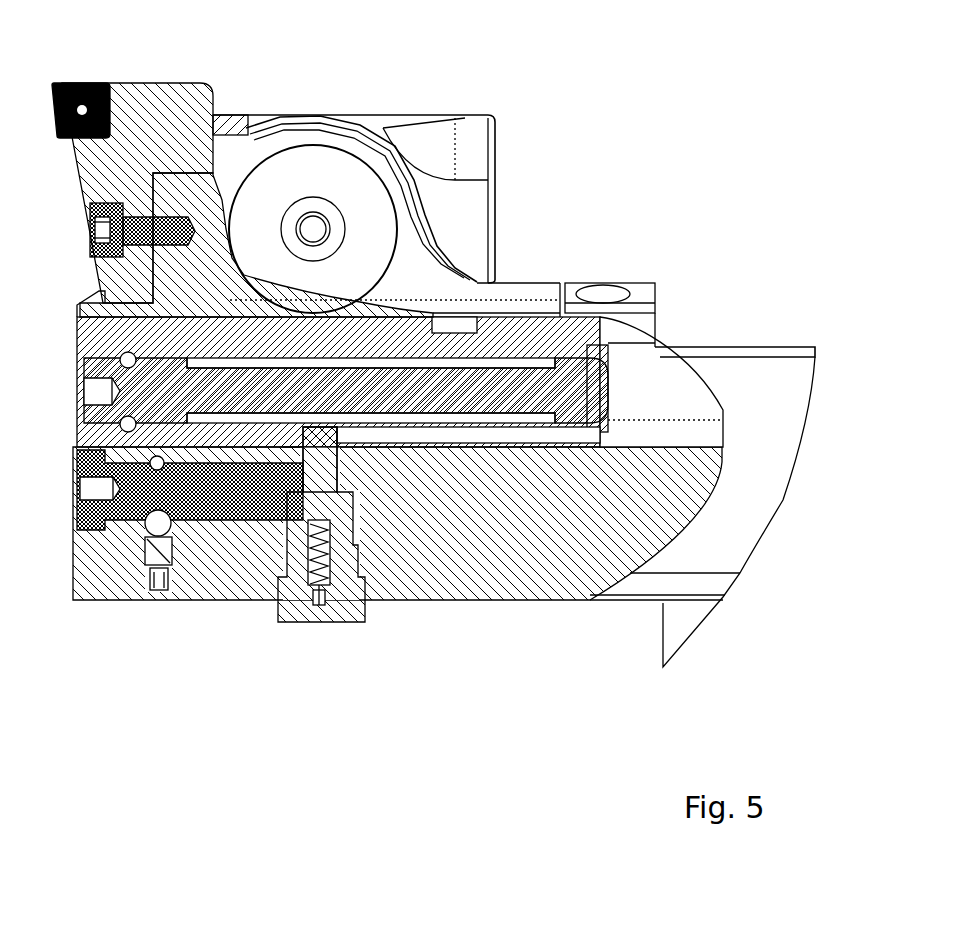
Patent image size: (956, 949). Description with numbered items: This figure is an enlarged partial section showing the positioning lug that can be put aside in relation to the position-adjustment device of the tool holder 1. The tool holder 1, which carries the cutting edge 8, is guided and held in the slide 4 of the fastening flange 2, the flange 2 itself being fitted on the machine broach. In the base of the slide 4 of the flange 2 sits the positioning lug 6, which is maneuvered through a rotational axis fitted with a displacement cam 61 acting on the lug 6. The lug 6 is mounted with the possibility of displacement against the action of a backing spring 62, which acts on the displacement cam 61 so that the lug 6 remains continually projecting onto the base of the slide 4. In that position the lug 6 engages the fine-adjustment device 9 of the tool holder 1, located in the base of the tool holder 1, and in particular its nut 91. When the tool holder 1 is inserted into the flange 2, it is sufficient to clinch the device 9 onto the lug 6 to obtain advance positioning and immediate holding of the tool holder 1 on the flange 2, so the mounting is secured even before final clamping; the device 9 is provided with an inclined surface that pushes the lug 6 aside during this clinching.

The tool holder 1 is at (457, 198).
The fastening flange 2 is at (635, 603).
The slide 4 is at (790, 392).
The positioning lug 6 is at (335, 579).
The displacement cam 61 is at (283, 480).
The backing spring 62 is at (312, 620).
The cutting edge 8 is at (83, 82).
The fine-adjustment device 9 is at (443, 426).
The nut 91 is at (283, 453).